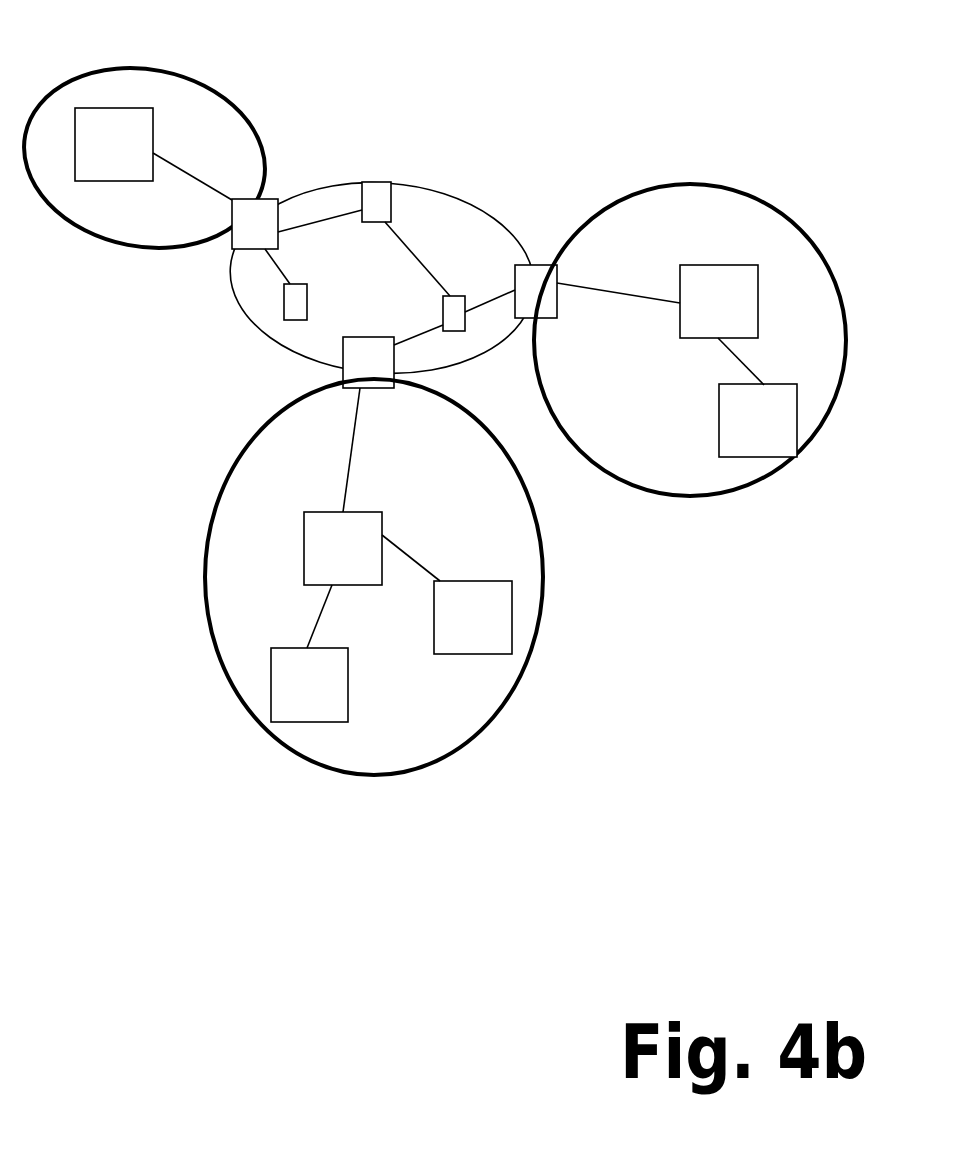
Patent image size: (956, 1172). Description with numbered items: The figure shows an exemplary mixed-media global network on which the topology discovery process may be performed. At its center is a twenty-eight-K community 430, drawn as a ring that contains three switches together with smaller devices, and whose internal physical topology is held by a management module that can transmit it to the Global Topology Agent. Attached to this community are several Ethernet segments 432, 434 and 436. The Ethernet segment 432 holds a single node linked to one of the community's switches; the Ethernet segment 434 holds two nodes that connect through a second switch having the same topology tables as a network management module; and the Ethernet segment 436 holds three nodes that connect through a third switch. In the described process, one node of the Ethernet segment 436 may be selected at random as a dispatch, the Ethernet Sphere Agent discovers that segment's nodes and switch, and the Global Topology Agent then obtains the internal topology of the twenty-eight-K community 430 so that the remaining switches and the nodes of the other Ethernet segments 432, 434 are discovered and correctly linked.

The 28K community 430 is at (417, 183).
The Ethernet segment 432 is at (130, 68).
The Ethernet segment 434 is at (700, 184).
The Ethernet segment 436 is at (205, 567).